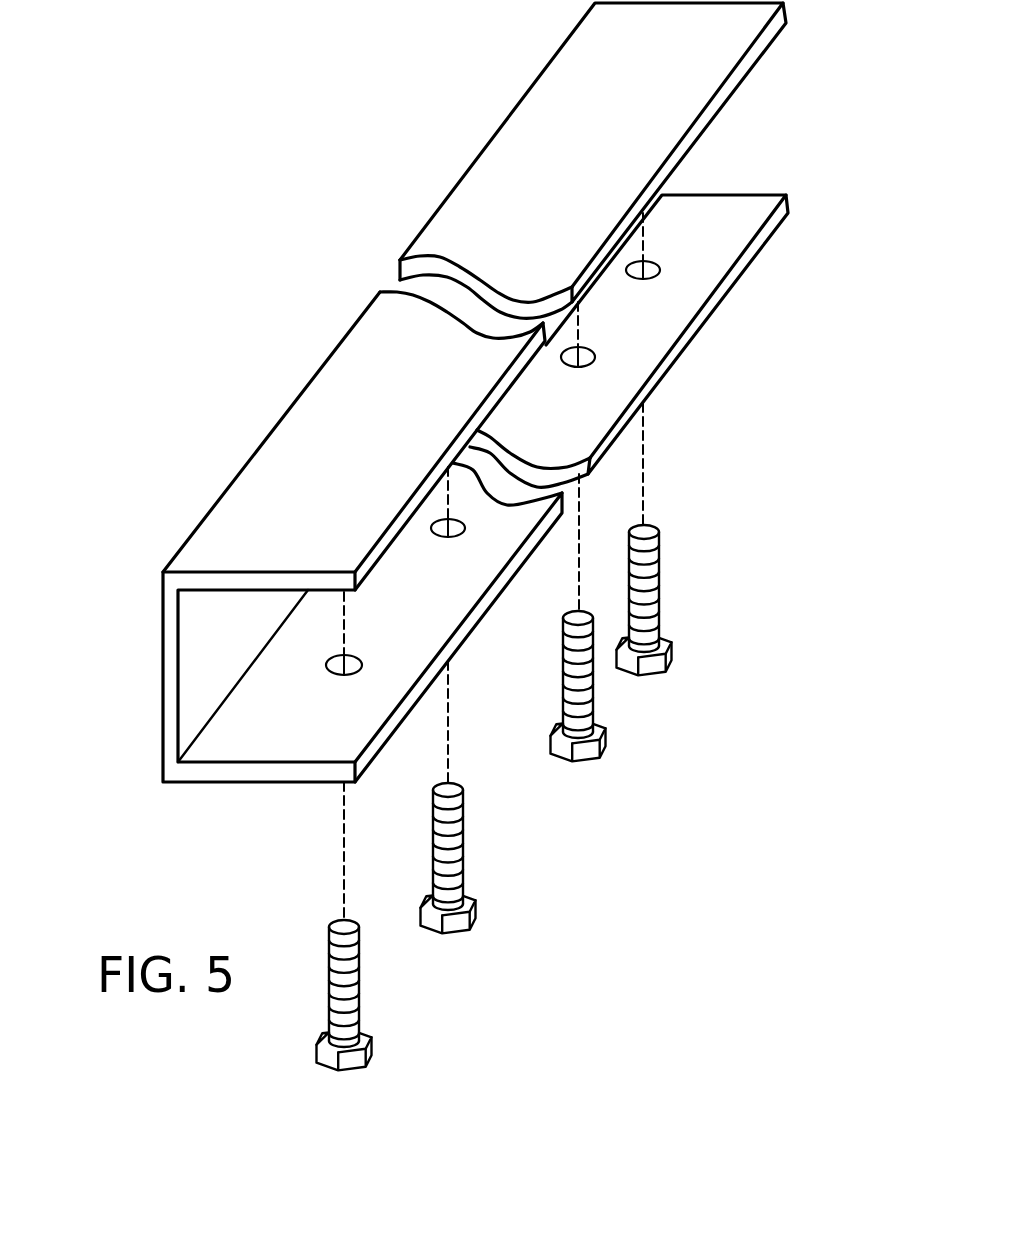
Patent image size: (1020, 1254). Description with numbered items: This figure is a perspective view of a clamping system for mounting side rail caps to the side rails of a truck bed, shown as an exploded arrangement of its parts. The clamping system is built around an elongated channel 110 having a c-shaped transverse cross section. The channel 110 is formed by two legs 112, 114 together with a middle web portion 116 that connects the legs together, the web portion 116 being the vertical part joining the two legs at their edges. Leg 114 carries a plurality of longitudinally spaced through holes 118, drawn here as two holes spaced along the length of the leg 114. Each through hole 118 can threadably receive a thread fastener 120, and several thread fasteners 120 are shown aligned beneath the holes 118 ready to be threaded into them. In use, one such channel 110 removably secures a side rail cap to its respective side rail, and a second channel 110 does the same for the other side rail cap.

The elongated channel 110 is at (291, 391).
The leg 112 is at (772, 45).
The leg 114 is at (765, 242).
The middle web portion 116 is at (162, 681).
The through hole 118 is at (595, 355).
The thread fastener 120 is at (672, 653).